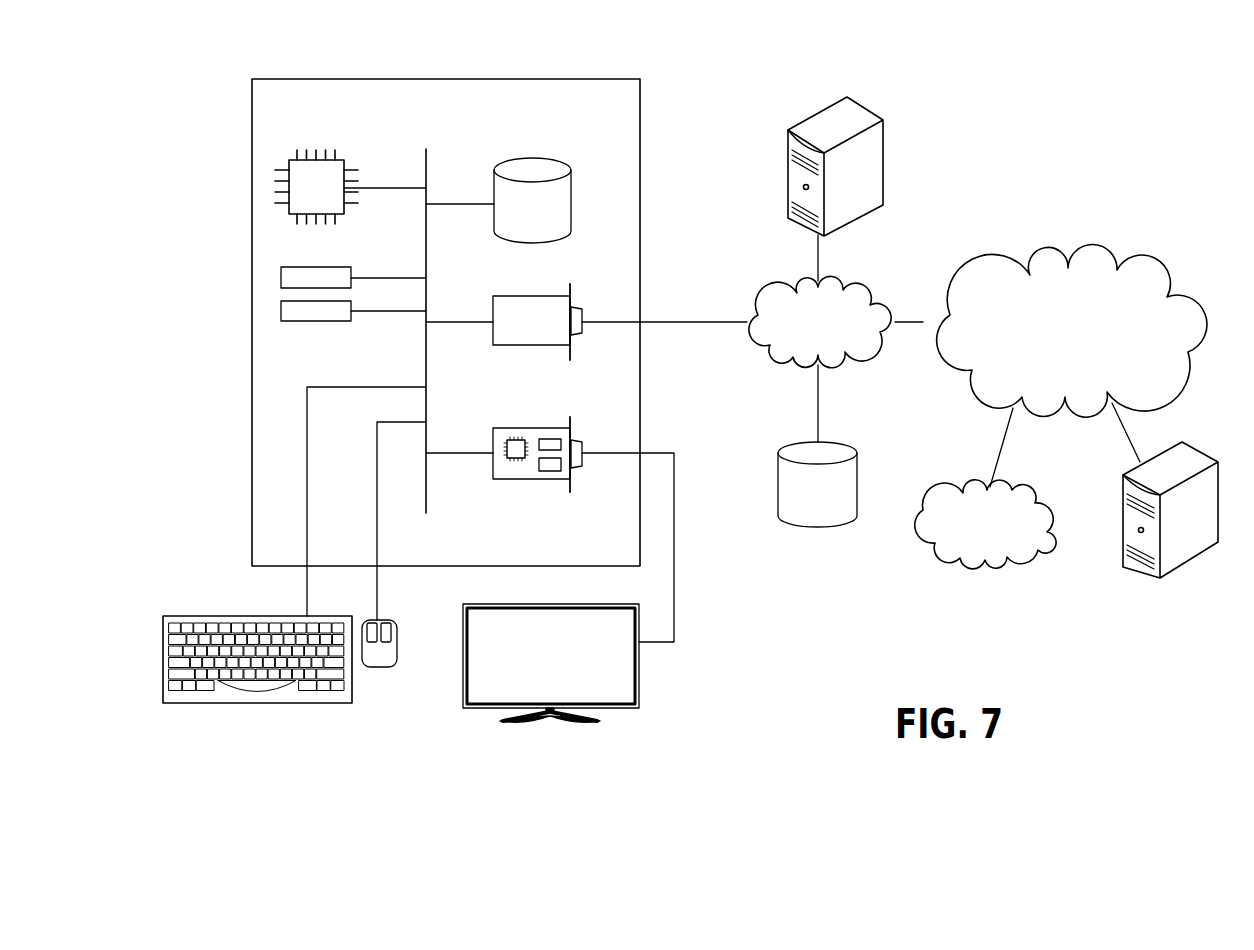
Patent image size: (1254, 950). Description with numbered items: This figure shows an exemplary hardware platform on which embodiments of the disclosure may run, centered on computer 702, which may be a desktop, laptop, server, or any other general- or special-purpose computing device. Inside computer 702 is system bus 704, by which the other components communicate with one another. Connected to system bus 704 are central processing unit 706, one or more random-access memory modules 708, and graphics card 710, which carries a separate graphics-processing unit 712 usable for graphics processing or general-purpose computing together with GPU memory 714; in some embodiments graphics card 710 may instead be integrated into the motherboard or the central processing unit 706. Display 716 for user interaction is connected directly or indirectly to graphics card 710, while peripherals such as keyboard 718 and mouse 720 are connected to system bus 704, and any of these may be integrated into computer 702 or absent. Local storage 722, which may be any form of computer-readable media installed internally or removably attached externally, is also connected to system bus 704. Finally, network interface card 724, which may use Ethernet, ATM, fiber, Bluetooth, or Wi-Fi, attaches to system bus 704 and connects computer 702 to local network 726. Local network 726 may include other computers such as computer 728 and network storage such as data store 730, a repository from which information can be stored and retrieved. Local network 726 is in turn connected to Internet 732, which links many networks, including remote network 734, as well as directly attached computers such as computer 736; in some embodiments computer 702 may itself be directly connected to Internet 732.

The computer 702 is at (597, 78).
The system bus 704 is at (427, 160).
The central processing unit 706 is at (337, 157).
The random-access memory modules 708 is at (351, 301).
The graphics card 710 is at (492, 440).
The graphics-processing unit 712 is at (516, 459).
The GPU memory 714 is at (550, 472).
The display 716 is at (639, 690).
The keyboard 718 is at (258, 703).
The mouse 720 is at (377, 667).
The local storage 722 is at (573, 187).
The network interface card 724 is at (492, 306).
The local network 726 is at (866, 285).
The computer 728 is at (870, 108).
The data store 730 is at (853, 445).
The Internet 732 is at (1112, 250).
The remote network 734 is at (1040, 488).
The computer 736 is at (1198, 445).